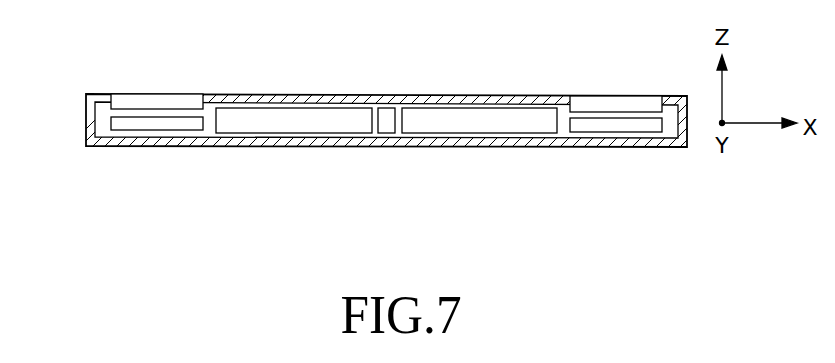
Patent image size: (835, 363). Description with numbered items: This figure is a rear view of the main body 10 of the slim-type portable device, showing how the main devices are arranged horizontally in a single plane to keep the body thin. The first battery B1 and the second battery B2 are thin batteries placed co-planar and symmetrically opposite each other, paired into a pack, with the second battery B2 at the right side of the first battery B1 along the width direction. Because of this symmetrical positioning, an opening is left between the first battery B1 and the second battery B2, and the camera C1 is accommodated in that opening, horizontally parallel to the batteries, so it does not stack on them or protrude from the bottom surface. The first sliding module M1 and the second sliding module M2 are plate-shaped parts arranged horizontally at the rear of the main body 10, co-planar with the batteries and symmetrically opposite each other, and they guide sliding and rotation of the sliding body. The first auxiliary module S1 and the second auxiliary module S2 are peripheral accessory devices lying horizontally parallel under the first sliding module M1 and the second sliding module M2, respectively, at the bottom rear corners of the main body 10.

The main body 10 is at (86, 107).
The second sliding module M2 is at (166, 103).
The second auxiliary module S2 is at (162, 130).
The second battery B2 is at (305, 118).
The camera C1 is at (390, 117).
The first battery B1 is at (465, 117).
The first sliding module M1 is at (608, 105).
The first auxiliary module S1 is at (607, 133).